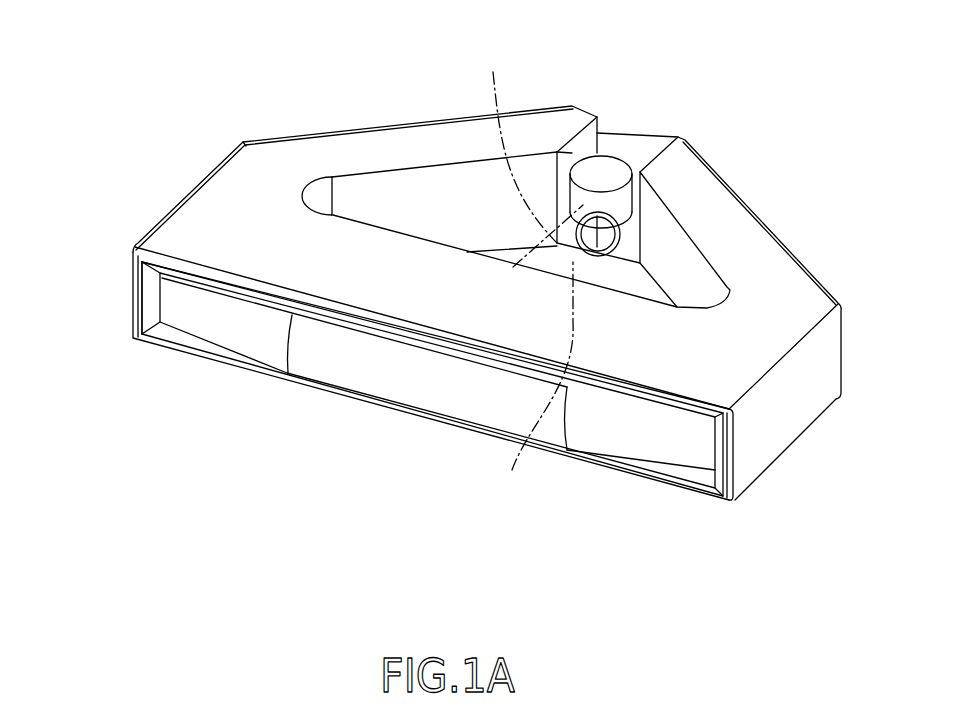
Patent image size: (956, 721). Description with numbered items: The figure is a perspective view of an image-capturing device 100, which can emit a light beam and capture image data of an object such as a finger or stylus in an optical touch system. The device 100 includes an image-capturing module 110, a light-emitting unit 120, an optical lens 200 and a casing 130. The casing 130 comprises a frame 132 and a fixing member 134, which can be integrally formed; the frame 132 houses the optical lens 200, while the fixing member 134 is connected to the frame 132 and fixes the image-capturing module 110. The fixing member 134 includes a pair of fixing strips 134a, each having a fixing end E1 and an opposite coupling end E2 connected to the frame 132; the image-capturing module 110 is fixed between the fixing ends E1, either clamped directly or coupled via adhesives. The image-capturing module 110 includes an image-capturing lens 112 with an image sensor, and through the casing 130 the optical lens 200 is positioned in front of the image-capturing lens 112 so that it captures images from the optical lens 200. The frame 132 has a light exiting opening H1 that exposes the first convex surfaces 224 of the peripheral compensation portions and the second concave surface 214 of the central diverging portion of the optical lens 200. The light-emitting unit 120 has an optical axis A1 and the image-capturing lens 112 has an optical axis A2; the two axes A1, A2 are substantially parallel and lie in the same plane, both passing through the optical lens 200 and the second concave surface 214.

The image-capturing device 100 is at (57, 238).
The casing 130 is at (238, 12).
The frame 132 is at (198, 213).
The fixing member 134 is at (278, 136).
The fixing strips 134a is at (415, 147).
The fixing end E1 is at (565, 128).
The coupling end E2 is at (255, 185).
The image-capturing module 110 is at (635, 152).
The image-capturing lens 112 is at (598, 236).
The light-emitting unit 120 is at (610, 175).
The optical lens 200 is at (588, 433).
The second concave surface 214 is at (432, 382).
The first convex surface 224 is at (203, 315).
The light exiting opening H1 is at (245, 378).
The optical axis A1 is at (528, 152).
The optical axis A2 is at (533, 386).